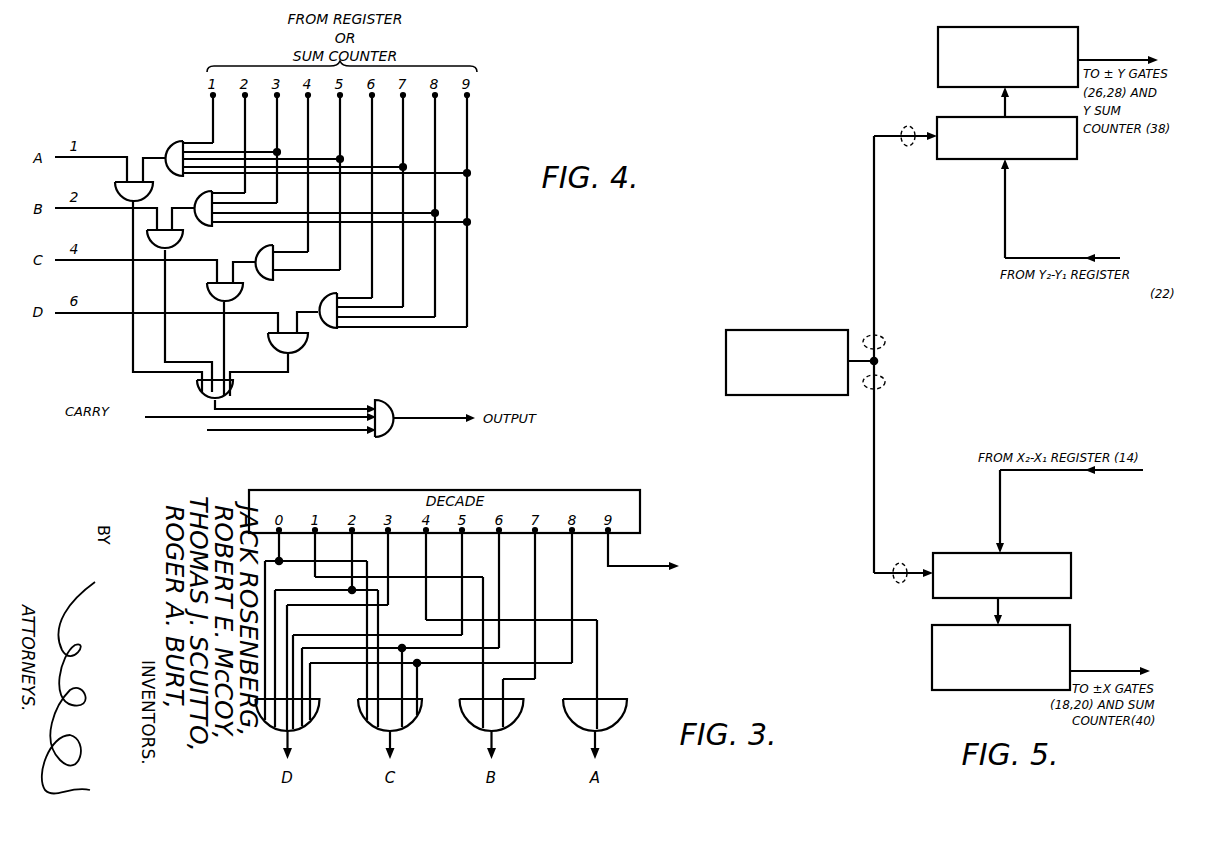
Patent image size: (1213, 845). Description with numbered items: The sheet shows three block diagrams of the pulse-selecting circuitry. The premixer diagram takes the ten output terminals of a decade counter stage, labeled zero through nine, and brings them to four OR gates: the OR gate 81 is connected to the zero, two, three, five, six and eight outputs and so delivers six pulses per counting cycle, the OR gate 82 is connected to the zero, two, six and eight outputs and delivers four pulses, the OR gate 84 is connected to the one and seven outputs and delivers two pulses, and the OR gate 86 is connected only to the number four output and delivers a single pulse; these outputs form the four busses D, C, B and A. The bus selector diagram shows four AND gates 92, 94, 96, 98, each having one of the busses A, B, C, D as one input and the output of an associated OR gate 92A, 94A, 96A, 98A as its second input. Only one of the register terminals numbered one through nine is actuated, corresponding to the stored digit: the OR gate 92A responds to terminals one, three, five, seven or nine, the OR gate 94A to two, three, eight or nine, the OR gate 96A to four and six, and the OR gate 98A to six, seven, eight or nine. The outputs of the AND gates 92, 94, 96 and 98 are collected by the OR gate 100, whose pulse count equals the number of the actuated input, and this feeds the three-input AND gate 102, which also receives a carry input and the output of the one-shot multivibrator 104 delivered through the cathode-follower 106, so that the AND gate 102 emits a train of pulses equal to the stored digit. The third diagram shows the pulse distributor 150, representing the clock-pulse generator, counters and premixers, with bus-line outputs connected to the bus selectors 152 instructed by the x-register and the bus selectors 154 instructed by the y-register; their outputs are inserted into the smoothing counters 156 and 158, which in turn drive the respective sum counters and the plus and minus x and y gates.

In FIG. 3, the OR gate 81 is at (312, 699).
In FIG. 3, the OR gate 82 is at (421, 699).
In FIG. 3, the OR gate 84 is at (522, 699).
In FIG. 3, the OR gate 86 is at (623, 703).
In FIG. 4, the AND gate 92 is at (117, 183).
In FIG. 4, the OR gate 92A is at (166, 141).
In FIG. 4, the AND gate 94 is at (182, 241).
In FIG. 4, the OR gate 94A is at (215, 226).
In FIG. 4, the AND gate 96 is at (208, 288).
In FIG. 4, the OR gate 96A is at (259, 279).
In FIG. 4, the AND gate 98 is at (298, 352).
In FIG. 4, the OR gate 98A is at (326, 328).
In FIG. 4, the OR gate 100 is at (234, 392).
In FIG. 4, the AND gate 102 is at (386, 400).
In FIG. 4, the one-shot multivibrator 104 is at (182, 431).
In FIG. 4, the cathode-follower 106 is at (225, 444).
In FIG. 5, the pulse distributor 150 is at (802, 330).
In FIG. 5, the bus selectors 152 is at (1046, 557).
In FIG. 5, the bus selectors 154 is at (1046, 154).
In FIG. 5, the smoothing counter 156 is at (1060, 641).
In FIG. 5, the smoothing counter 158 is at (937, 58).